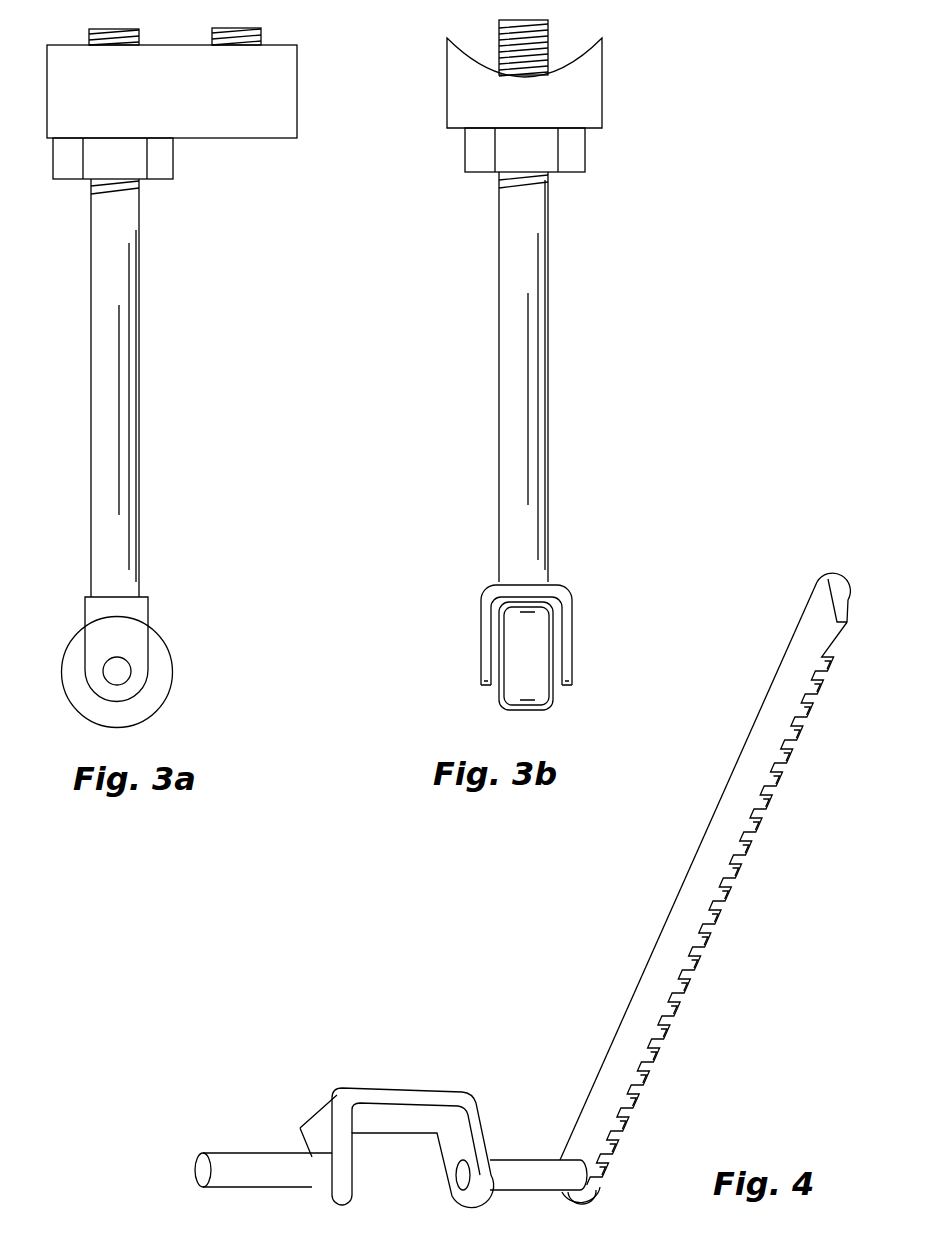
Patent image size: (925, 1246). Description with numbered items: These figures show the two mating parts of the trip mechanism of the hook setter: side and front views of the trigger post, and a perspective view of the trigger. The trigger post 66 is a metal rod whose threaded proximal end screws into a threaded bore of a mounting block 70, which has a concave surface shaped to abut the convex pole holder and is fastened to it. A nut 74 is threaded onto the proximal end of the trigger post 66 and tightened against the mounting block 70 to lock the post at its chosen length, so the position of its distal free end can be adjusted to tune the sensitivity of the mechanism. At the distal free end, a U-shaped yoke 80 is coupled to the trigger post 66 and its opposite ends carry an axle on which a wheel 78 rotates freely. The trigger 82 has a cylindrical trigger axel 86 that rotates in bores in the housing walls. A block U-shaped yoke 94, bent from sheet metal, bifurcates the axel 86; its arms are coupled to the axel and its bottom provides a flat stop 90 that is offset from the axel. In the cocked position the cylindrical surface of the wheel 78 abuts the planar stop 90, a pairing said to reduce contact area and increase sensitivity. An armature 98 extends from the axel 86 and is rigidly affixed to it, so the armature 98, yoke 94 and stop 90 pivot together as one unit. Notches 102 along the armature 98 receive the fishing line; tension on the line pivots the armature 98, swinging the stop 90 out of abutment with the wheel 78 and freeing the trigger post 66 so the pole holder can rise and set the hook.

In FIG. 3A, the trigger post 66 is at (108, 306).
In FIG. 3B, the trigger post 66 is at (508, 310).
In FIG. 3A, the mounting block 70 is at (287, 95).
In FIG. 3B, the mounting block 70 is at (592, 83).
In FIG. 3A, the nut 74 is at (168, 157).
In FIG. 3A, the wheel 78 is at (168, 643).
In FIG. 3B, the wheel 78 is at (533, 652).
In FIG. 3A, the yoke 80 is at (88, 604).
In FIG. 3B, the yoke 80 is at (483, 597).
In FIG. 4, the trigger 82 is at (572, 1030).
In FIG. 4, the trigger axel 86 is at (250, 1152).
In FIG. 4, the stop 90 is at (388, 1085).
In FIG. 4, the yoke 94 is at (317, 1128).
In FIG. 4, the armature 98 is at (706, 835).
In FIG. 4, the notches 102 is at (790, 750).